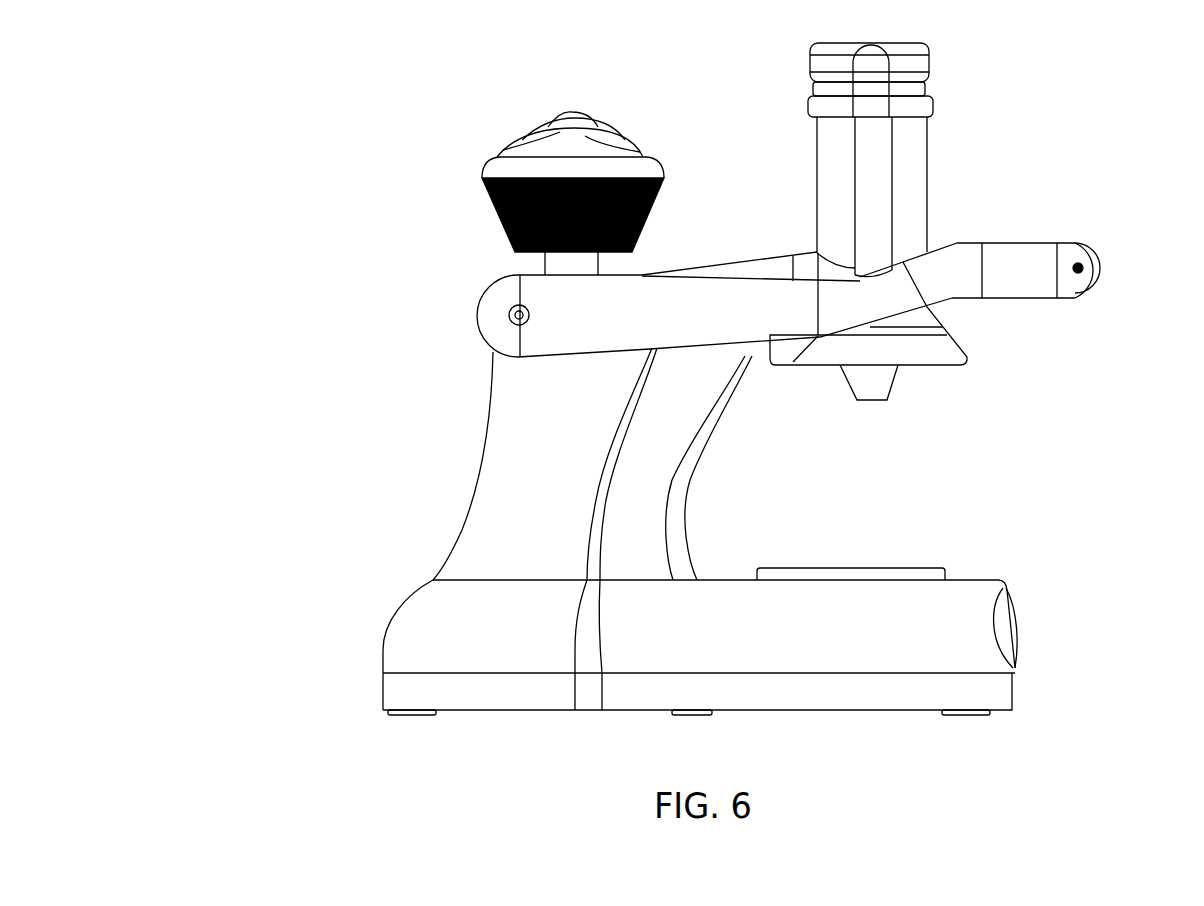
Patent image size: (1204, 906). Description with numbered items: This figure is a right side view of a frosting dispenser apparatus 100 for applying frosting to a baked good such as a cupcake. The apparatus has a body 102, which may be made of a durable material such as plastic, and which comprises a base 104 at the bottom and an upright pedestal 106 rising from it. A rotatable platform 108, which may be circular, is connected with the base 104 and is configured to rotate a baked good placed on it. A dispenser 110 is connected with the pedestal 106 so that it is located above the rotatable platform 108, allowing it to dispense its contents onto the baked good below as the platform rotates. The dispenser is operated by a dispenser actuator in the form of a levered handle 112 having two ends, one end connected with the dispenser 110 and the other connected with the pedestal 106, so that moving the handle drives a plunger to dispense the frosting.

The frosting dispenser apparatus 100 is at (240, 51).
The body 102 is at (1013, 613).
The base 104 is at (383, 683).
The pedestal 106 is at (490, 458).
The rotatable platform 108 is at (857, 568).
The dispenser 110 is at (927, 173).
The handle 112 is at (1043, 280).